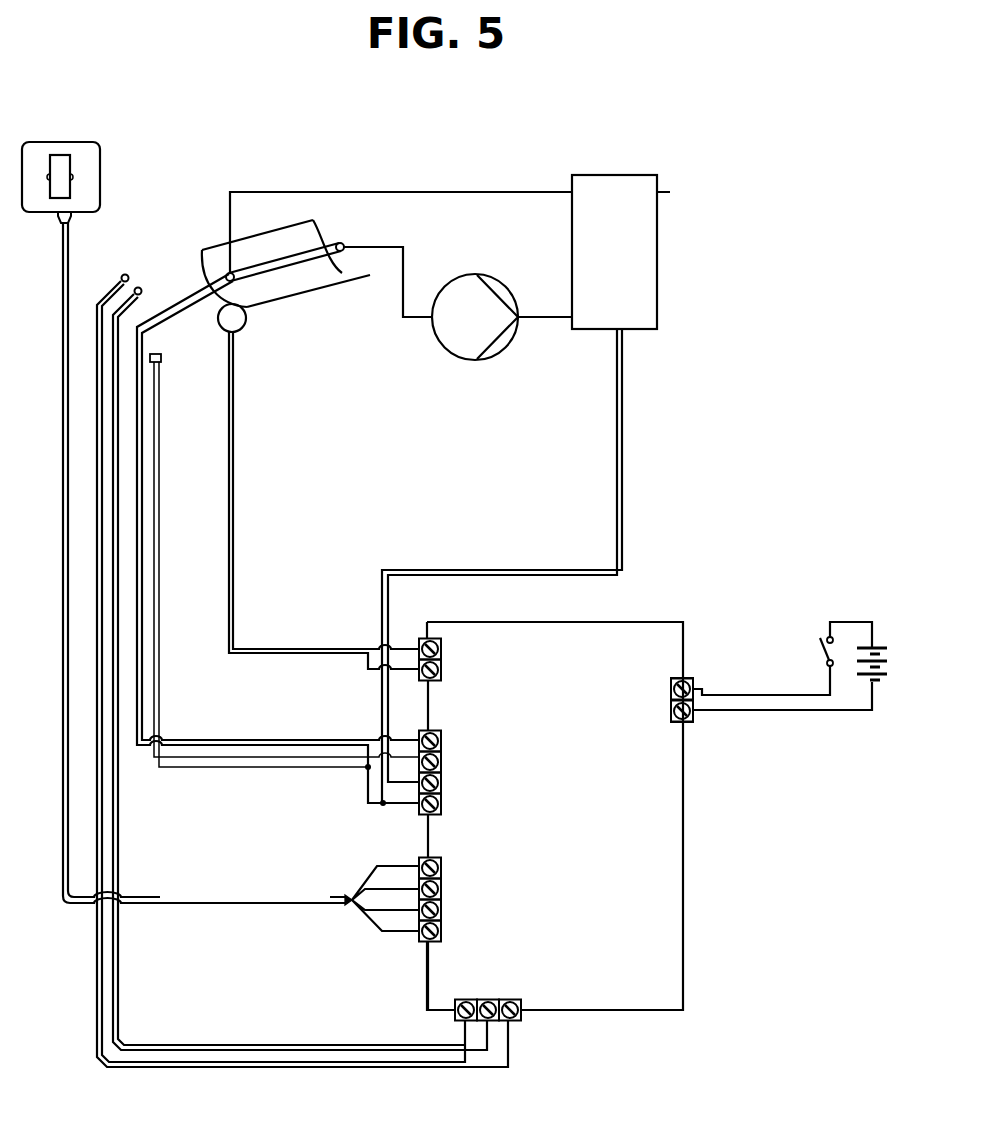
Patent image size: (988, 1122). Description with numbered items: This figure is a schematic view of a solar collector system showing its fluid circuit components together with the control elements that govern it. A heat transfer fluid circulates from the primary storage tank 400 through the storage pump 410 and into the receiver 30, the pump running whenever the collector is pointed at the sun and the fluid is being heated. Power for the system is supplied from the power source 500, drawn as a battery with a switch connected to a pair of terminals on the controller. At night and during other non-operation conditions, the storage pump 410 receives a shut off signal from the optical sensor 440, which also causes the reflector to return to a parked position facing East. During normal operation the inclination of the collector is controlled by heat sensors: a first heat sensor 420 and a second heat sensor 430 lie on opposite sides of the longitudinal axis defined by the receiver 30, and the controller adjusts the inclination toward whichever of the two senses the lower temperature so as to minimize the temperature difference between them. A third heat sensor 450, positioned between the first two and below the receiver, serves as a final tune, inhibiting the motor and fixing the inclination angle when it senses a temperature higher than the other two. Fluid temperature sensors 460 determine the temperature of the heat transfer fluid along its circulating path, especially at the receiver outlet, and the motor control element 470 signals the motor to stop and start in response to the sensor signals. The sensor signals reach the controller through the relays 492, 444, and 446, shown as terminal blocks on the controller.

The receiver 30 is at (327, 245).
The primary storage tank 400 is at (592, 271).
The storage pump 410 is at (448, 331).
The first heat sensor 420 is at (122, 276).
The second heat sensor 430 is at (165, 284).
The optical sensor 440 is at (63, 148).
The relay 444 is at (445, 730).
The relay 446 is at (455, 998).
The third heat sensor 450 is at (162, 358).
The fluid temperature sensors 460 is at (152, 328).
The motor control element 470 is at (240, 318).
The relay 492 is at (445, 857).
The power source 500 is at (884, 677).